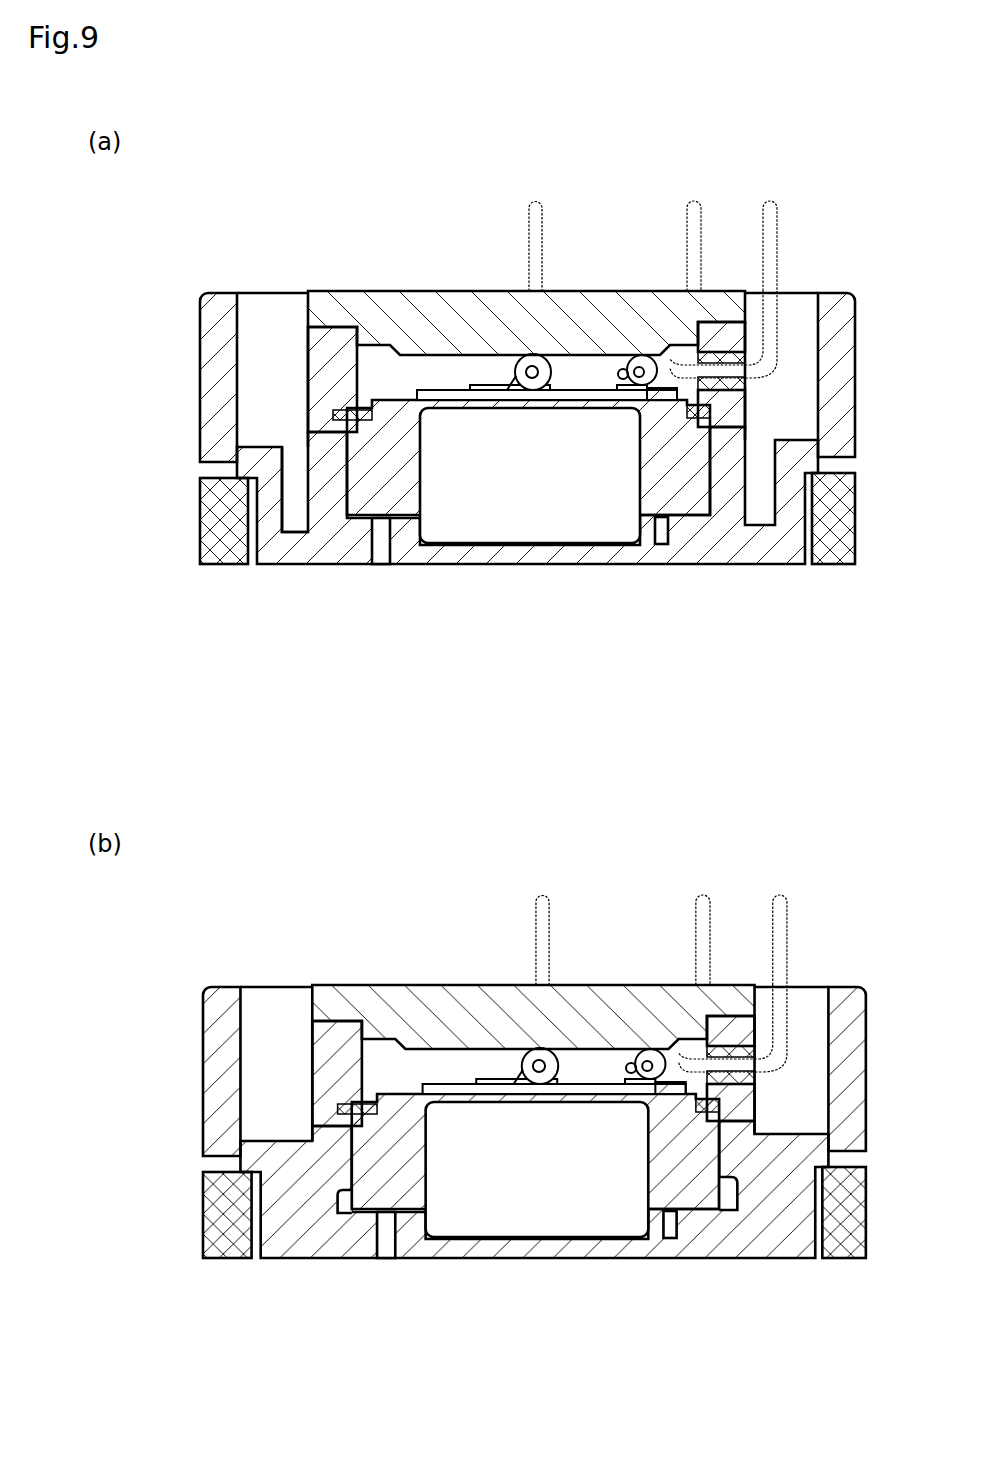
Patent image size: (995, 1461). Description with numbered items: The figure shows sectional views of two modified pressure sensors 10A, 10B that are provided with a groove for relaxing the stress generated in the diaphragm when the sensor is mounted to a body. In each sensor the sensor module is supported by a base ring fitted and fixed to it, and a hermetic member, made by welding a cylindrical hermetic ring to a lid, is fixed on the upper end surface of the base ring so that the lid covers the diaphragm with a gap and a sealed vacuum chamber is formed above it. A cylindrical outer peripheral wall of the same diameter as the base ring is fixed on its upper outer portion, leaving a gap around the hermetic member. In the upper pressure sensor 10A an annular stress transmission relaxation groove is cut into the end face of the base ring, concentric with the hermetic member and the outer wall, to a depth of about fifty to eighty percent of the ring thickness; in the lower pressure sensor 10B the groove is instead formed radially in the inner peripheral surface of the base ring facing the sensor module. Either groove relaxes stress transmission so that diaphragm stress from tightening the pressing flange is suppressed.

The pressure sensor 10A is at (484, 407).
The pressure sensor 10B is at (490, 1101).